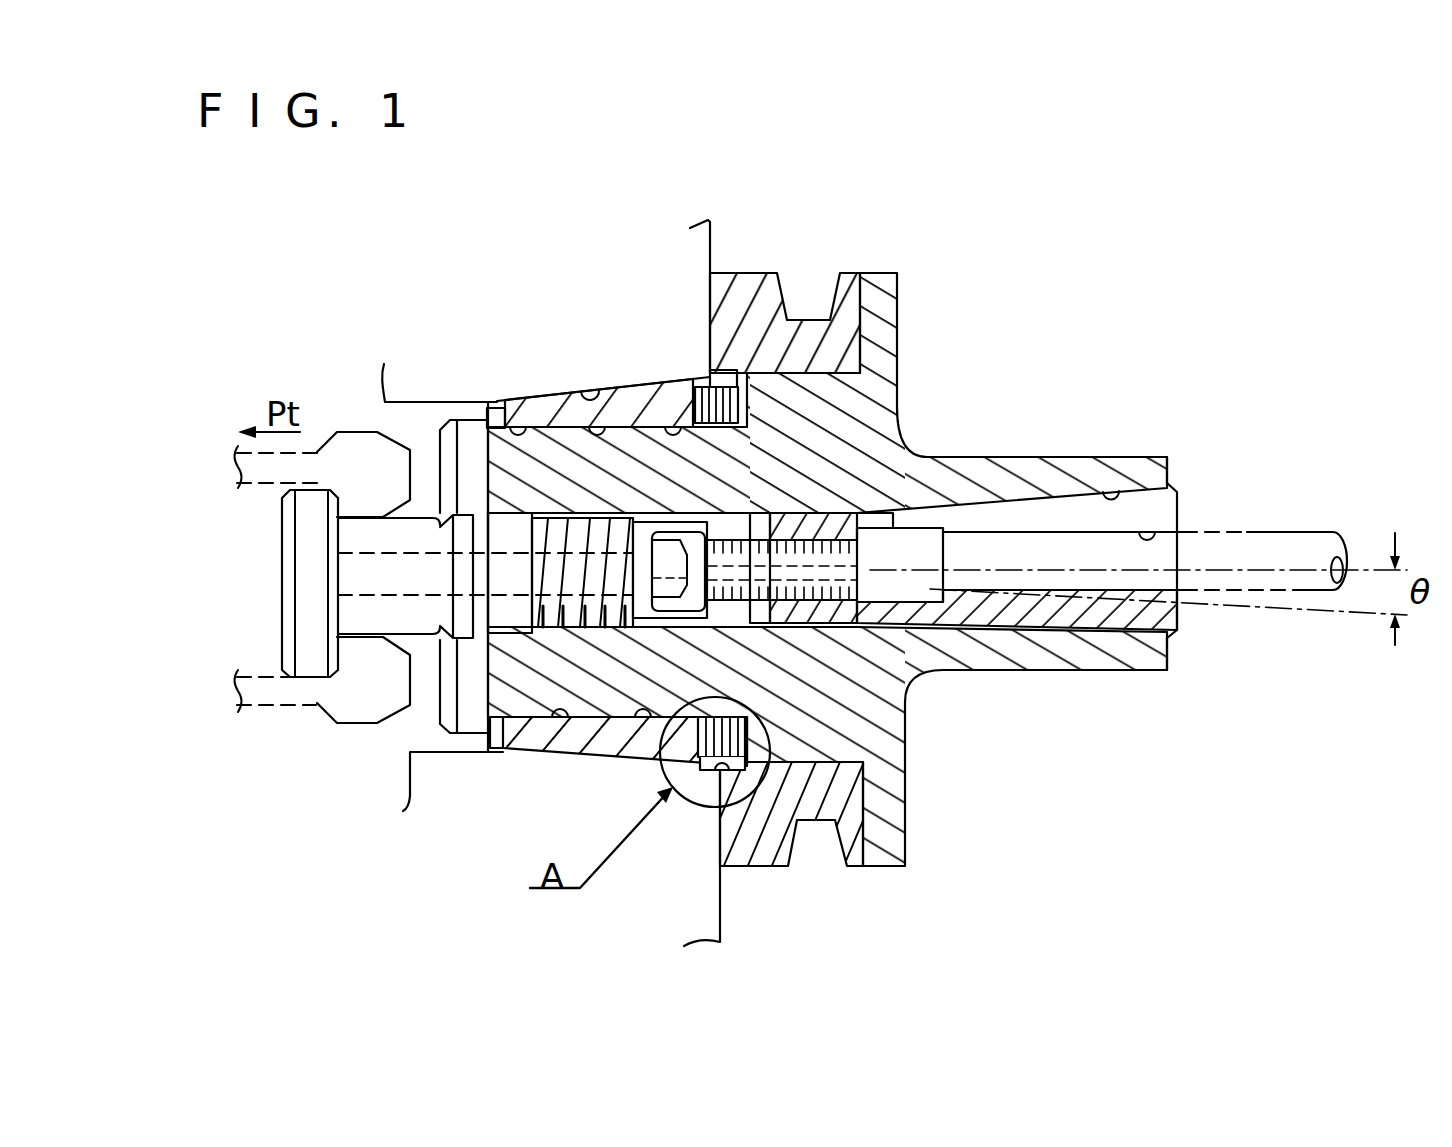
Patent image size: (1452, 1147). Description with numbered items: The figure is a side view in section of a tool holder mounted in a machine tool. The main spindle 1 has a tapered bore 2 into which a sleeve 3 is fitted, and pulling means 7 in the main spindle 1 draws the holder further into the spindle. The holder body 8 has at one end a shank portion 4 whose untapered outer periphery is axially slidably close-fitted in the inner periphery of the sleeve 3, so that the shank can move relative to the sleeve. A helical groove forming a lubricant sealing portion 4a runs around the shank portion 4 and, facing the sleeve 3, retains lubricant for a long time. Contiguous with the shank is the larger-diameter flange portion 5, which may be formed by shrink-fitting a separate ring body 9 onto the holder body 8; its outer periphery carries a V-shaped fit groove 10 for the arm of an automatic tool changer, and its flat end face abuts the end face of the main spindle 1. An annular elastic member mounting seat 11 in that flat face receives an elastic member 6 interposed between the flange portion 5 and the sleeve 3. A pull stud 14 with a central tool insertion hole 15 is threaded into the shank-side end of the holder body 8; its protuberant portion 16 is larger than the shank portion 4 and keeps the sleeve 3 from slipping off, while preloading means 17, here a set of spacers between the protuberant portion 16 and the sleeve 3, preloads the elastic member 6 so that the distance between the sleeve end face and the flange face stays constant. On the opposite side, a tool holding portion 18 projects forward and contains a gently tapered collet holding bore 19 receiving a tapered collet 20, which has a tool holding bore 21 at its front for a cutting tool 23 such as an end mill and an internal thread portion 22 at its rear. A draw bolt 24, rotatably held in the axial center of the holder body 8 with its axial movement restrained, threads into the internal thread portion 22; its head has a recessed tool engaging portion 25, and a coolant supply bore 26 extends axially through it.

The main spindle 1 is at (710, 247).
The tapered bore 2 is at (600, 382).
The sleeve 3 is at (643, 397).
The shank portion 4 is at (551, 443).
The lubricant sealing portion 4a is at (548, 728).
The flange portion 5 is at (853, 272).
The elastic member 6 is at (723, 372).
The pulling means 7 is at (347, 430).
The holder body 8 is at (928, 457).
The ring body 9 is at (847, 868).
The fit groove 10 is at (796, 852).
The elastic member mounting seat 11 is at (707, 768).
The pull stud 14 is at (290, 655).
The tool insertion hole 15 is at (318, 594).
The protuberant portion 16 is at (457, 427).
The preloading means 17 is at (493, 405).
The tool holding portion 18 is at (1068, 457).
The collet holding bore 19 is at (1111, 495).
The tapered collet 20 is at (1053, 618).
The tool holding bore 21 is at (1160, 542).
The internal thread portion 22 is at (856, 607).
The cutting tool 23 is at (1222, 592).
The draw bolt 24 is at (760, 522).
The tool engaging portion 25 is at (647, 585).
The coolant supply bore 26 is at (687, 594).